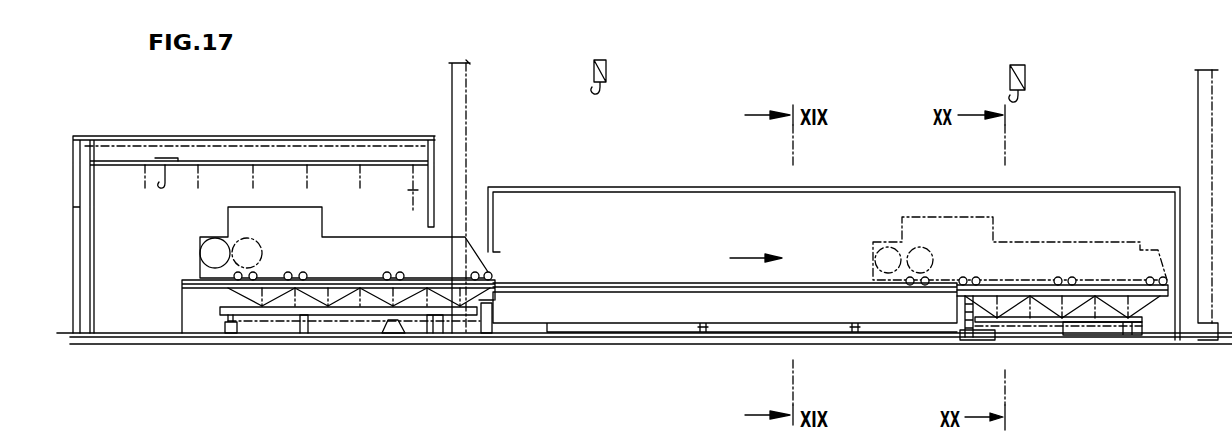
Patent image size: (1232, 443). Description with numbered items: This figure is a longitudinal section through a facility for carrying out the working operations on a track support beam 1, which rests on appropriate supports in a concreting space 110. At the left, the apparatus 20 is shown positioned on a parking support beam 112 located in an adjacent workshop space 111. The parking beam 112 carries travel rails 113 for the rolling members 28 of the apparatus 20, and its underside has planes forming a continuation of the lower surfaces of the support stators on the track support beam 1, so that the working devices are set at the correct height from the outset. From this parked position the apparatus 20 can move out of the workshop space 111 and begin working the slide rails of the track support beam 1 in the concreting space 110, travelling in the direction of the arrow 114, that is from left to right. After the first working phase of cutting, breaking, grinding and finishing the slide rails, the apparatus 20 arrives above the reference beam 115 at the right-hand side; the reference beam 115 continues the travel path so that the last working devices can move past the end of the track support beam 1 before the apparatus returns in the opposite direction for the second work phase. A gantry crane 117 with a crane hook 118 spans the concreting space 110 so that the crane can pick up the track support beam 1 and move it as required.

The track support beam 1 is at (588, 300).
The apparatus 20 is at (337, 234).
The rolling members 28 is at (387, 272).
The concreting space 110 is at (706, 207).
The workshop space 111 is at (319, 140).
The parking support beam 112 is at (362, 290).
The travel rails 113 is at (278, 283).
The arrow 114 is at (755, 258).
The reference beam 115 is at (1040, 318).
The gantry crane 117 is at (463, 135).
The crane hook 118 is at (610, 73).